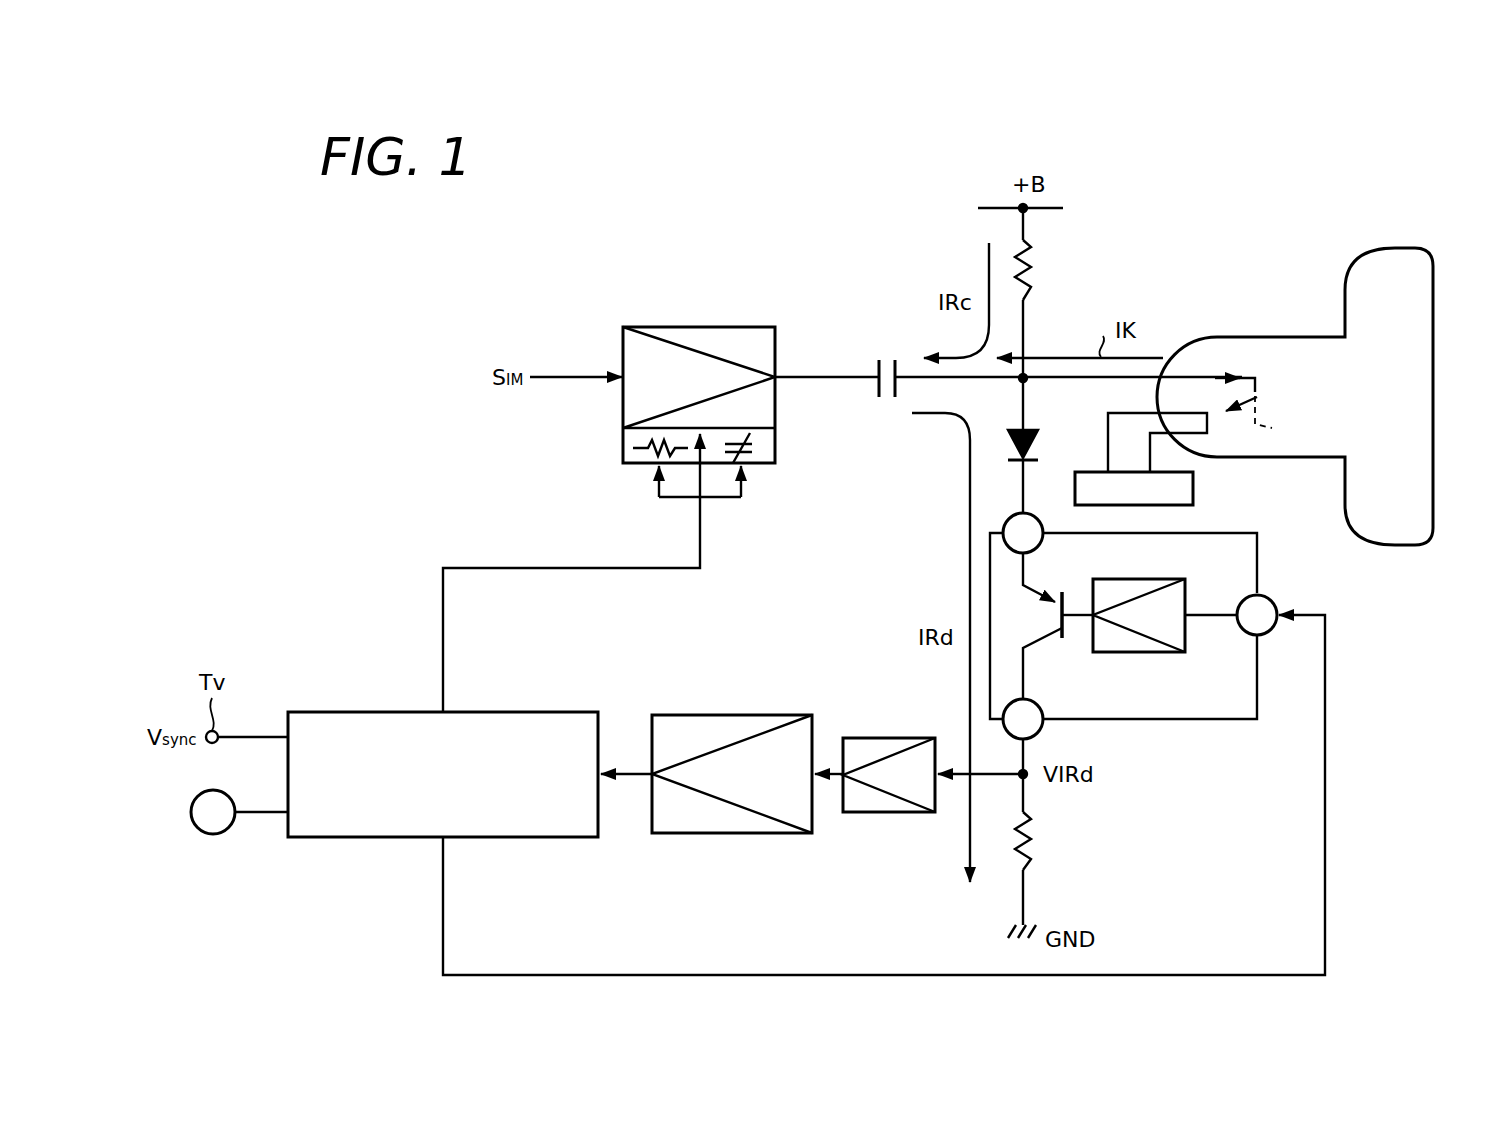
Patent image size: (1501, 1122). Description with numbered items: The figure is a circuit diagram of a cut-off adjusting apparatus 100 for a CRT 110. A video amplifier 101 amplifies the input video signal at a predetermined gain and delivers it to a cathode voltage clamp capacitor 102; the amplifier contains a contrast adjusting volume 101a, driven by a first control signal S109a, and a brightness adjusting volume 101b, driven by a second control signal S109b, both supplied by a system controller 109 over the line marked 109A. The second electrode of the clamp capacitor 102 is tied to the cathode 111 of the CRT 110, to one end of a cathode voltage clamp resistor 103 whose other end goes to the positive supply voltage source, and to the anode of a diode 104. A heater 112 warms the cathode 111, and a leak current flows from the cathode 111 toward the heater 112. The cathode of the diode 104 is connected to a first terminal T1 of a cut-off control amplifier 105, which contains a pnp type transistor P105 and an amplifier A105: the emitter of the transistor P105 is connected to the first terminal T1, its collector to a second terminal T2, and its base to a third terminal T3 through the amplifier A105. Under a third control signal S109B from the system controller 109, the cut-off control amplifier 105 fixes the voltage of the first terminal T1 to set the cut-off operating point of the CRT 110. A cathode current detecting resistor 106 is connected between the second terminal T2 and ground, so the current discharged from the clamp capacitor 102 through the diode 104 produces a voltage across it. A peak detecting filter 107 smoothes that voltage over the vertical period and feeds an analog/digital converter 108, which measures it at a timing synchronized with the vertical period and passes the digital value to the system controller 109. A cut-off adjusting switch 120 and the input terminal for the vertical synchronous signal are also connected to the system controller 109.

The cut-off adjusting apparatus 100 is at (818, 238).
The video amplifier 101 is at (708, 327).
The contrast adjusting volume 101a is at (623, 458).
The brightness adjusting volume 101b is at (775, 453).
The cathode voltage clamp capacitor 102 is at (879, 358).
The cathode voltage clamp resistor 103 is at (1035, 270).
The diode 104 is at (1028, 426).
The cut-off control amplifier 105 is at (1111, 636).
The cathode current detecting resistor 106 is at (1030, 855).
The peak detecting filter 107 is at (890, 812).
The analog/digital converter 108 is at (738, 833).
The system controller 109 is at (575, 840).
The control signal line 109A is at (443, 635).
The CRT 110 is at (1412, 248).
The cathode 111 is at (1250, 378).
The heater 112 is at (1193, 488).
The cut-off adjusting switch 120 is at (213, 834).
The amplifier A105 is at (1120, 579).
The pnp type transistor P105 is at (1032, 620).
The first terminal T1 is at (1012, 516).
The second terminal T2 is at (1042, 710).
The third terminal T3 is at (1272, 605).
The control signal S109a is at (659, 497).
The control signal S109b is at (741, 499).
The control signal S109B is at (443, 945).